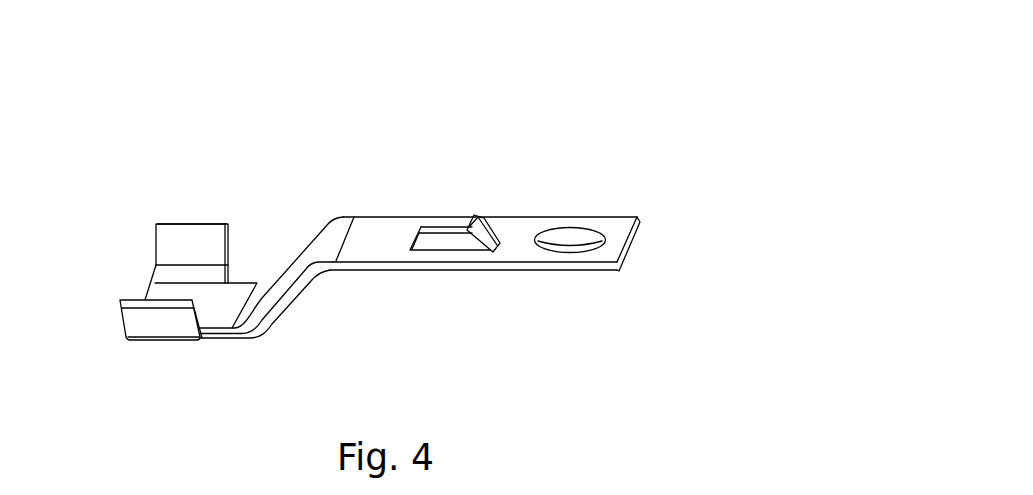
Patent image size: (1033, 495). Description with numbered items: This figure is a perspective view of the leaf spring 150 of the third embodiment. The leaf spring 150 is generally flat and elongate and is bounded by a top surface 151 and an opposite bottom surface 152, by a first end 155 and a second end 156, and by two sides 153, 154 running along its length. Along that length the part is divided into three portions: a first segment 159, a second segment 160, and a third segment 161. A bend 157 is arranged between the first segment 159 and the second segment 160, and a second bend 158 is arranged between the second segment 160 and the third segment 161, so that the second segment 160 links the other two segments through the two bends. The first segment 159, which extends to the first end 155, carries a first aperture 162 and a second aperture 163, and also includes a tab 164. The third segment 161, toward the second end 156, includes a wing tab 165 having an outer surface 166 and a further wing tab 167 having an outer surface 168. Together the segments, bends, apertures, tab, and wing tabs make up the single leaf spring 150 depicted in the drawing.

The leaf spring 150 is at (662, 74).
The top surface 151 is at (373, 227).
The bottom surface 152 is at (476, 271).
The side 153 is at (292, 290).
The side 154 is at (420, 221).
The first end 155 is at (632, 241).
The second end 156 is at (147, 292).
The bend 157 is at (336, 230).
The bend 158 is at (260, 288).
The first segment 159 is at (533, 223).
The second segment 160 is at (292, 265).
The third segment 161 is at (210, 303).
The first aperture 162 is at (570, 240).
The second aperture 163 is at (445, 240).
The tab 164 is at (479, 220).
The wing tab 165 is at (181, 243).
The outer surface 166 is at (172, 224).
The wing tab 167 is at (122, 317).
The outer surface 168 is at (149, 325).